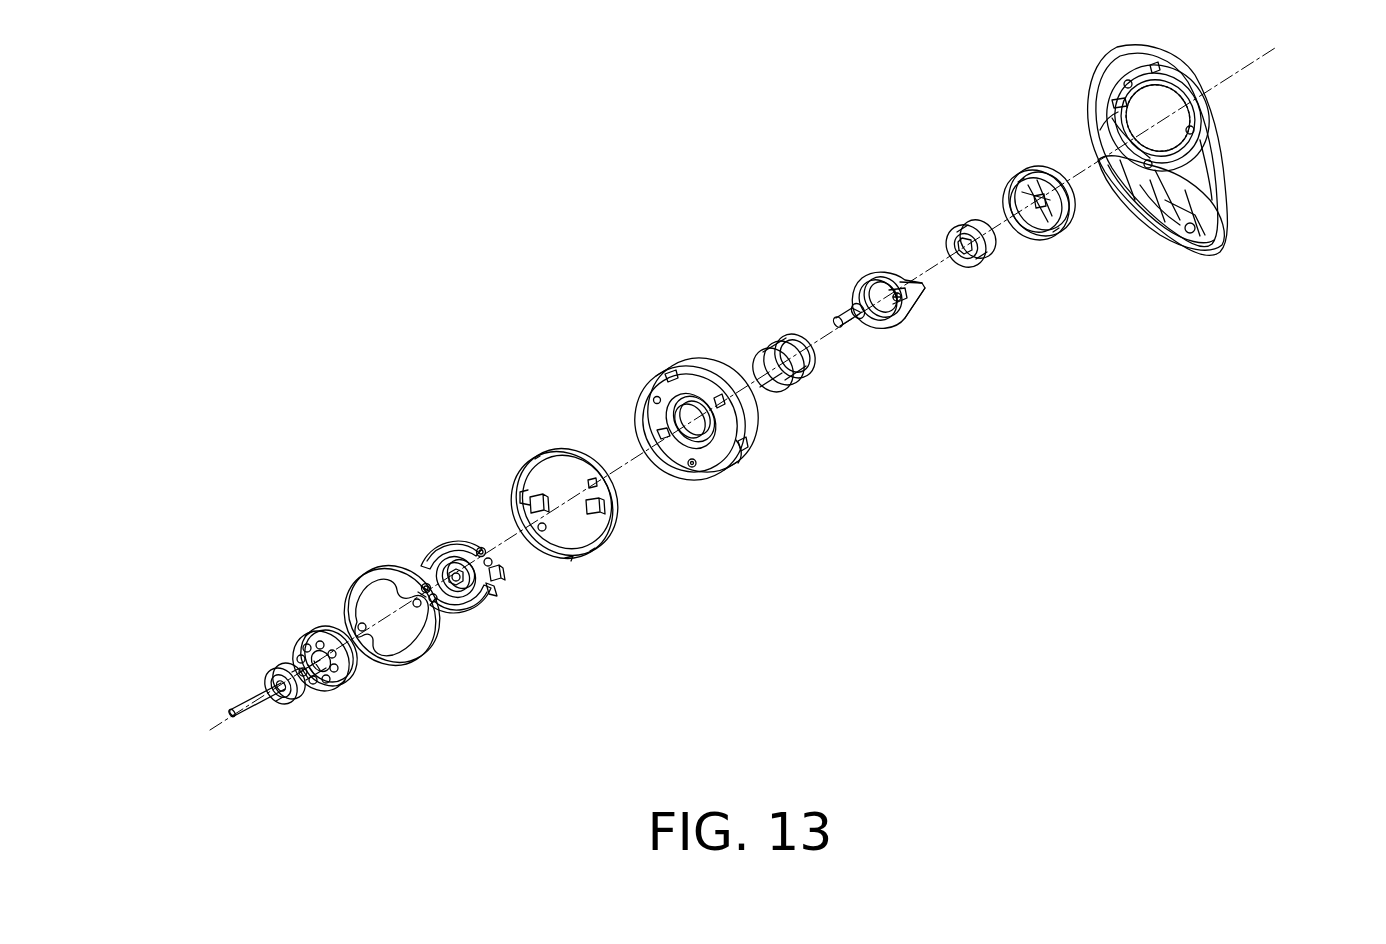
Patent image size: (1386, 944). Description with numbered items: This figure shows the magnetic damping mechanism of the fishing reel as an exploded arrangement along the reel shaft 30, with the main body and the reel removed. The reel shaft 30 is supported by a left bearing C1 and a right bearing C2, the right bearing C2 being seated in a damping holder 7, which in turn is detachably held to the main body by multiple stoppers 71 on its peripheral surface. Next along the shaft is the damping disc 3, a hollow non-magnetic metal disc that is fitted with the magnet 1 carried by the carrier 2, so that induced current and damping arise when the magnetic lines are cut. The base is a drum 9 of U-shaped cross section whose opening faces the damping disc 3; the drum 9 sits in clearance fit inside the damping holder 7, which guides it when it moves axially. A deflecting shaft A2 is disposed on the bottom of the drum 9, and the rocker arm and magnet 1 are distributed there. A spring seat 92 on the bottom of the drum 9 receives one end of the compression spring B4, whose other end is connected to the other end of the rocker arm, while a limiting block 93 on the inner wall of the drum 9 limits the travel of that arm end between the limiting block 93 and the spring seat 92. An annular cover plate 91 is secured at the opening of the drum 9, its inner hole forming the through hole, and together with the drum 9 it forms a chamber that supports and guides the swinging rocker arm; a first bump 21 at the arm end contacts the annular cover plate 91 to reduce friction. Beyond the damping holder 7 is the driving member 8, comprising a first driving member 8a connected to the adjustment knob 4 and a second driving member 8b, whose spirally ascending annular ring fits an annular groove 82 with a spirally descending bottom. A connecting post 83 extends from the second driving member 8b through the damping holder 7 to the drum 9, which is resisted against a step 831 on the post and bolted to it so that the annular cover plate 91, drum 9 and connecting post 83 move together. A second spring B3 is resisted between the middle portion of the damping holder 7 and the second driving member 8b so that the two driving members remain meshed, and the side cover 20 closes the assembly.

The magnet 1 is at (420, 572).
The carrier 2 is at (440, 548).
The damping disc 3 is at (320, 630).
The adjustment knob 4 is at (1077, 250).
The damping holder 7 is at (717, 389).
The driving member 8 is at (947, 406).
The first driving member 8a is at (1010, 277).
The second driving member 8b is at (902, 343).
The drum 9 is at (608, 531).
The side cover 20 is at (1243, 193).
The first bump 21 is at (498, 577).
The reel shaft 30 is at (233, 703).
The stopper 71 is at (738, 452).
The annular groove 82 is at (958, 232).
The connecting post 83 is at (905, 280).
The annular cover plate 91 is at (428, 663).
The spring seat 92 is at (600, 503).
The limiting block 93 is at (530, 497).
The step 831 is at (835, 271).
The deflecting shaft A2 is at (493, 547).
The second spring B3 is at (825, 390).
The compression spring B4 is at (417, 572).
The left bearing C1 is at (282, 667).
The right bearing C2 is at (490, 597).